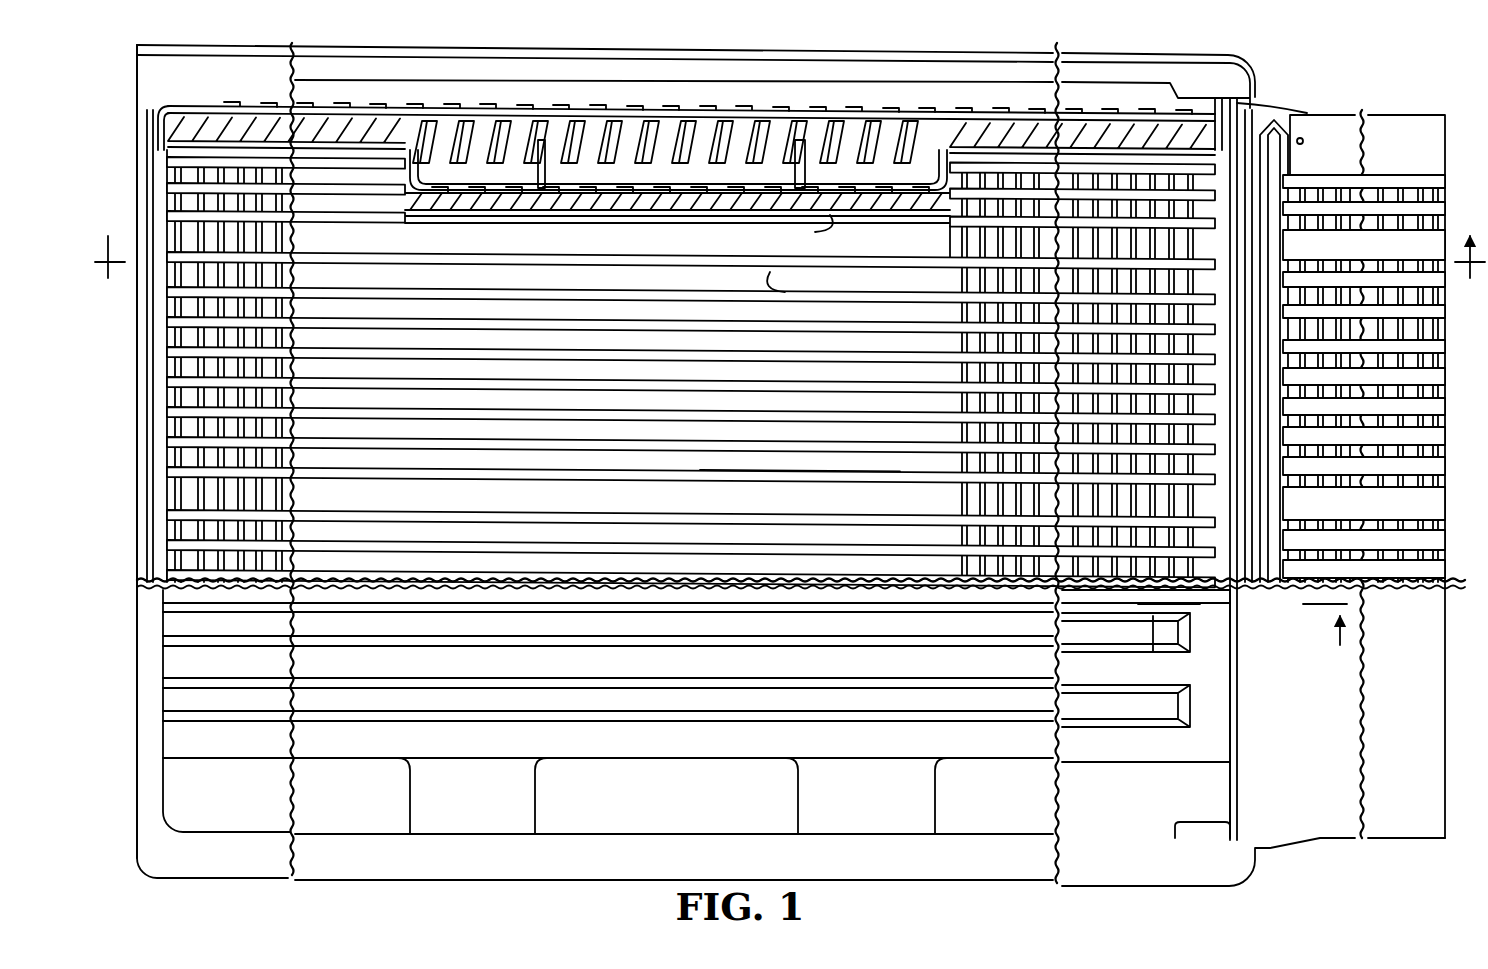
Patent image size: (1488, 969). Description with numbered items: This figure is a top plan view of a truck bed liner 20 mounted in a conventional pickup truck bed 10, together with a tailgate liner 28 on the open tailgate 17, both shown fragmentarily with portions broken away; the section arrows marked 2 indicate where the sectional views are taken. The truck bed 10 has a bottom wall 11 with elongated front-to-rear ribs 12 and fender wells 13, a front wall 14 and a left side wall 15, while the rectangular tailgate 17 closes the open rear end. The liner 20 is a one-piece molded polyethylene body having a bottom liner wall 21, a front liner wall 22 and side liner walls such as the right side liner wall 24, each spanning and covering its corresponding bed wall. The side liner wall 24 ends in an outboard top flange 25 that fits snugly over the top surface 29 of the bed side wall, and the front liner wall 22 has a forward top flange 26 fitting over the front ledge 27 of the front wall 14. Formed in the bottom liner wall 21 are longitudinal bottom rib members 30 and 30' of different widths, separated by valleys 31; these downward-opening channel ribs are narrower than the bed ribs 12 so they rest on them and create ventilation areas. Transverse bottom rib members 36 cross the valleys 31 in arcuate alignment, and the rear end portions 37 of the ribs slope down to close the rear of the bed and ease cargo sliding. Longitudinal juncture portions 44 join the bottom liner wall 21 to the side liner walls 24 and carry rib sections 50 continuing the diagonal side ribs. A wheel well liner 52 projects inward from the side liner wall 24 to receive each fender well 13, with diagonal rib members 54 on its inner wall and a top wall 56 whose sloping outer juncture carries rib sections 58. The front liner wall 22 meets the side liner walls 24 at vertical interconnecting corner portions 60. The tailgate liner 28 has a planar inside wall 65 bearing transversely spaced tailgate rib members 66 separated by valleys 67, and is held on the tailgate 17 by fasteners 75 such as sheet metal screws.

The pickup truck bed 10 is at (322, 892).
The bottom wall 11 is at (330, 801).
The elongated ribs 12 is at (612, 698).
The fender wells 13 is at (630, 811).
The front wall 14 is at (165, 786).
The left side wall 15 is at (955, 853).
The tailgate 17 is at (1420, 732).
The truck bed liner 20 is at (520, 590).
The bottom liner wall 21 is at (447, 505).
The front liner wall 22 is at (182, 488).
The right side liner wall 24 is at (972, 112).
The top flange 25 is at (478, 78).
The forward projecting top flange 26 is at (160, 428).
The front ledge 27 is at (137, 720).
The tailgate liner 28 is at (1428, 138).
The top surface 29 is at (490, 869).
The longitudinal bottom rib members 30 is at (1042, 373).
The longitudinal bottom rib member 30' is at (912, 243).
The valleys 31 is at (782, 528).
The transverse bottom rib members 36 is at (768, 285).
The rear end portions 37 is at (1240, 590).
The juncture portions 44 is at (346, 132).
The rib sections 50 is at (1112, 135).
The wheel well liner 52 is at (737, 140).
The diagonal rib members 54 is at (570, 212).
The top wall 56 is at (622, 178).
The rib sections 58 is at (665, 130).
The interconnecting corner portions 60 is at (182, 103).
The inside wall 65 is at (1373, 143).
The tailgate rib members 66 is at (1432, 206).
The valleys 67 is at (1430, 342).
The fasteners 75 is at (1300, 137).
The section line 2- 2 is at (790, 271).